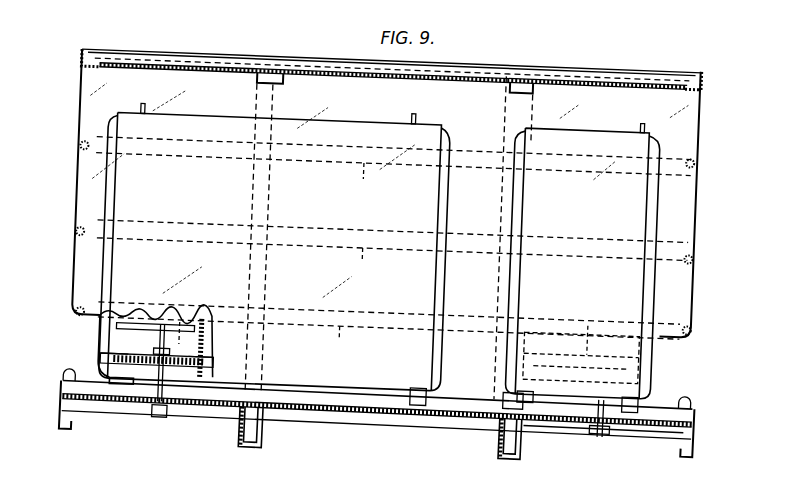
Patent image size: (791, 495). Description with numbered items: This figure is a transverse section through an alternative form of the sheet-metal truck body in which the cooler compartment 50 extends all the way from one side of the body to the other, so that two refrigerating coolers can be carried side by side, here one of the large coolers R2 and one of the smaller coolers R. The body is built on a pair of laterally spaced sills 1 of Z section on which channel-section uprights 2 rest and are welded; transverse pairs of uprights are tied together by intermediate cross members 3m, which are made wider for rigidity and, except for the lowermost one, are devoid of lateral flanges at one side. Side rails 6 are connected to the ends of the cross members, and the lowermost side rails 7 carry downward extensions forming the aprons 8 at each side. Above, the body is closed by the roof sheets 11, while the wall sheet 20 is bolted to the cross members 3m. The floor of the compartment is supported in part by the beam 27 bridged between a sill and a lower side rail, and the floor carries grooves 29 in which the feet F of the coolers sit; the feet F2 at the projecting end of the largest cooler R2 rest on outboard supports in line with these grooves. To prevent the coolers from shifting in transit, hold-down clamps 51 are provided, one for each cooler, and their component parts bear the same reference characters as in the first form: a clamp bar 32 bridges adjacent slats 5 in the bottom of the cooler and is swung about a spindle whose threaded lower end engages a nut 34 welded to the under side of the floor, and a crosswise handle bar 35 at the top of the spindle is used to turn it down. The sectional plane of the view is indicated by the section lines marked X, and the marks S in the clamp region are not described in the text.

The sill 1 is at (279, 421).
The upright 2 is at (278, 93).
The intermediate cross member 3m is at (349, 263).
The slat 5 is at (82, 50).
The side rail 6 is at (84, 143).
The lowermost side rail 7 is at (82, 385).
The apron 8 is at (76, 426).
The roof sheet 11 is at (327, 62).
The compartment wall sheet 20 is at (82, 98).
The beam 27 is at (116, 411).
The groove 29 is at (225, 412).
The clamp bar 32 is at (192, 352).
The nut 34 is at (185, 414).
The handle bar 35 is at (192, 318).
The compartment 50 is at (701, 104).
The hold-down clamp 51 is at (110, 331).
The foot F is at (518, 379).
The foot of largest cooler F2 is at (431, 375).
The refrigerating cooler R is at (603, 115).
The largest refrigerating cooler R2 is at (111, 188).
The shelf S is at (139, 356).
The section line X is at (245, 52).